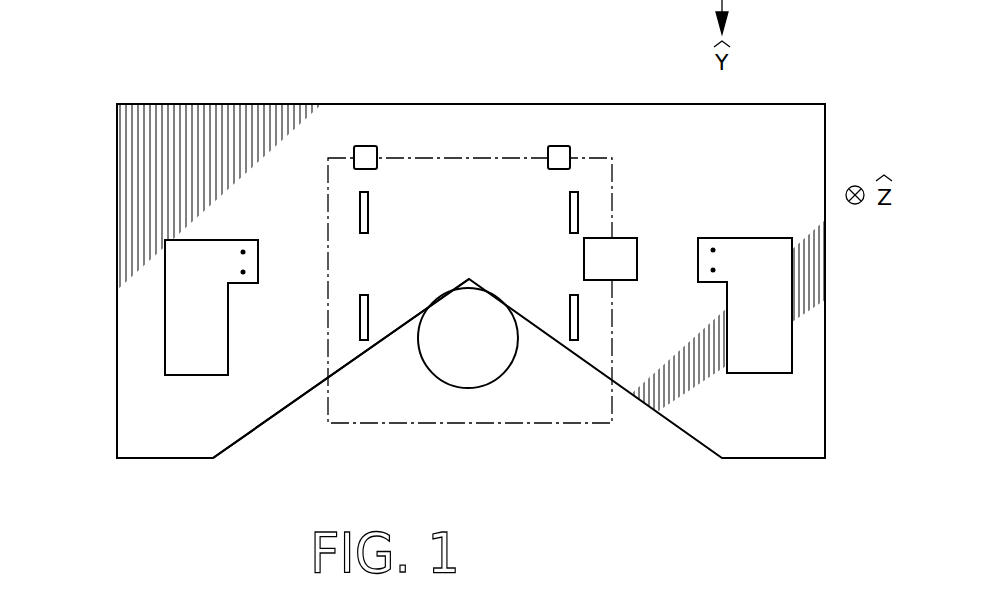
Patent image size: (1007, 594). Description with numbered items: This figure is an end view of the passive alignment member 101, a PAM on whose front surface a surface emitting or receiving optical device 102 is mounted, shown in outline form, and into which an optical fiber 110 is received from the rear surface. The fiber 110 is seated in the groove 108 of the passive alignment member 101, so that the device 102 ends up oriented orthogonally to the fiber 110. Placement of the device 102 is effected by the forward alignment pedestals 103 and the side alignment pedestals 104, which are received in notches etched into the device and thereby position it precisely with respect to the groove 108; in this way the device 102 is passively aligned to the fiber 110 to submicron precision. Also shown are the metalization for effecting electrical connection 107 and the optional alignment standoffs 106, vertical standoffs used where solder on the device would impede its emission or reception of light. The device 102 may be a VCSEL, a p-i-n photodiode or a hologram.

The passive alignment member 101 is at (748, 431).
The optical device 102 is at (585, 423).
The forward alignment pedestals 103 is at (370, 146).
The side alignment pedestals 104 is at (637, 256).
The alignment standoffs 106 is at (578, 318).
The metalization for effecting electrical connection 107 is at (165, 316).
The groove 108 is at (417, 320).
The optical fiber 110 is at (469, 358).